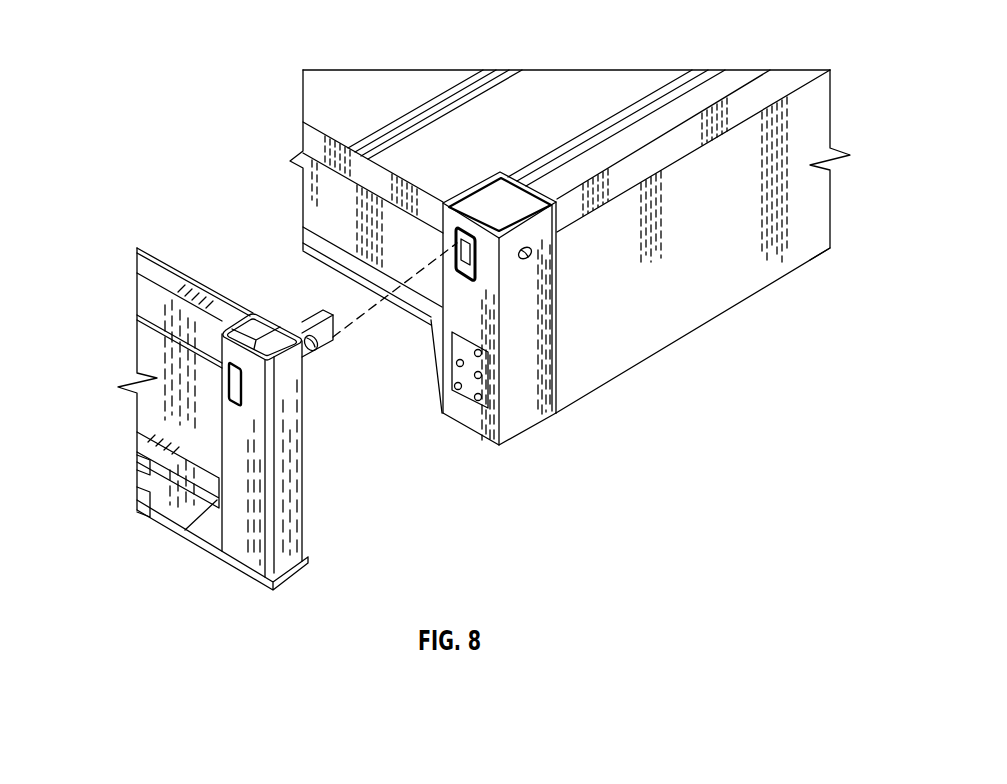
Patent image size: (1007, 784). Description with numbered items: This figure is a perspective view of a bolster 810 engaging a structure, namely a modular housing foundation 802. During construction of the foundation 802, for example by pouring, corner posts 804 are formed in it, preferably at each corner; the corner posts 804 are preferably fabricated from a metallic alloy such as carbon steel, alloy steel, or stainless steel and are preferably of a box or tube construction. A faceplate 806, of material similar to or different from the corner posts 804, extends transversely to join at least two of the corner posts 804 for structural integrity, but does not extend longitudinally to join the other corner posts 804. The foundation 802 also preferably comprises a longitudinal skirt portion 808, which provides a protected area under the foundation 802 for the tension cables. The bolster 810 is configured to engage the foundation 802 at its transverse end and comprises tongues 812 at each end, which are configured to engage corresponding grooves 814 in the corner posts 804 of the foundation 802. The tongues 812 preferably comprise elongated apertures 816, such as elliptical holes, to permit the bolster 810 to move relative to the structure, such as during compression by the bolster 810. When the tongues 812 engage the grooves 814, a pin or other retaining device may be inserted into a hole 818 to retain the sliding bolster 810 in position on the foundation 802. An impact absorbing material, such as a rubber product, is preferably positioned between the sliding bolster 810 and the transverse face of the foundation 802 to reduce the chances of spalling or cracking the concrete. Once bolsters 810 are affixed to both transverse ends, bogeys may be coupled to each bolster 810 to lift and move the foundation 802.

The modular housing foundation 802 is at (611, 108).
The corner post 804 is at (527, 375).
The faceplate 806 is at (333, 195).
The longitudinal skirt portion 808 is at (720, 275).
The bolster 810 is at (129, 222).
The tongue 812 is at (338, 337).
The groove 814 is at (457, 241).
The elongated aperture 816 is at (318, 328).
The hole 818 is at (533, 258).